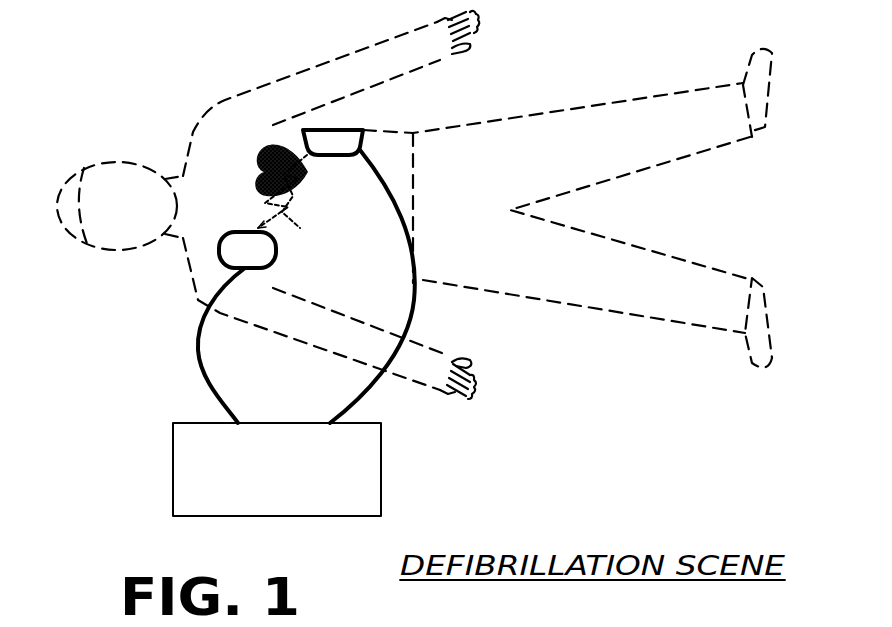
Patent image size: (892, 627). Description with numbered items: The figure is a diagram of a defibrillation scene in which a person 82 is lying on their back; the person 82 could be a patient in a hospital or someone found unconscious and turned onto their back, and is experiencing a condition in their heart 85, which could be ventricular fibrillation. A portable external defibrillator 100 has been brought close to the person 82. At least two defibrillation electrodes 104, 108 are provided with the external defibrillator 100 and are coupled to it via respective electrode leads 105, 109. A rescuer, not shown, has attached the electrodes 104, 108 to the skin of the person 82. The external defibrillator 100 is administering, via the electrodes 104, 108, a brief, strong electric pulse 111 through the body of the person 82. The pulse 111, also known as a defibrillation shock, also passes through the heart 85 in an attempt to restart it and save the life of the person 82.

The person 82 is at (190, 132).
The heart 85 is at (262, 147).
The external defibrillator 100 is at (261, 453).
The defibrillation electrode 104 is at (219, 253).
The electrode lead 105 is at (197, 353).
The defibrillation electrode 108 is at (351, 130).
The electrode lead 109 is at (342, 403).
The electric pulse 111 is at (298, 205).